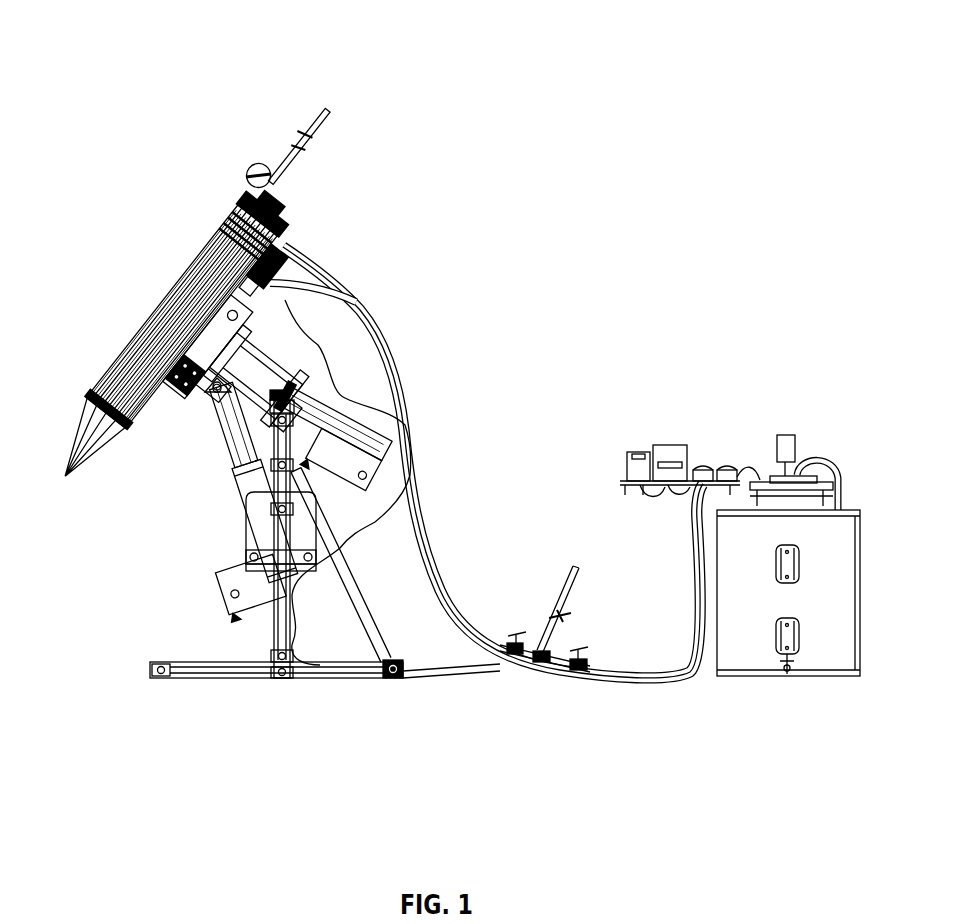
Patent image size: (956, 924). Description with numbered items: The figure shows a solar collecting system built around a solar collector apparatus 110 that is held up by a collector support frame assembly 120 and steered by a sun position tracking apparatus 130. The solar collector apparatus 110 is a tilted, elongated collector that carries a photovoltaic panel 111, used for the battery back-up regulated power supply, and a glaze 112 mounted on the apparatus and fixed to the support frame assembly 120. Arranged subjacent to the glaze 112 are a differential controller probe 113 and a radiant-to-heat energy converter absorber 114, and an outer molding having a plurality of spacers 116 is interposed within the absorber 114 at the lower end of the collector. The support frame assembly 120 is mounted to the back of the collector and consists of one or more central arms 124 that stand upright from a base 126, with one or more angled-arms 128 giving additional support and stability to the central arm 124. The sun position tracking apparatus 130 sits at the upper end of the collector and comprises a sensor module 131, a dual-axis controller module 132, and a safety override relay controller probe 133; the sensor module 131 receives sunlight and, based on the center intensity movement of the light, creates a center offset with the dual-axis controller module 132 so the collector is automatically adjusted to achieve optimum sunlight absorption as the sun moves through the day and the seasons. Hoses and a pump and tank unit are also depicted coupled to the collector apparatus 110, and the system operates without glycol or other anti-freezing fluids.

The solar collector apparatus 110 is at (166, 524).
The photovoltaic panel 111 is at (306, 103).
The glaze 112 is at (130, 341).
The differential controller probe 113 is at (250, 208).
The radiant-to-heat energy converter absorber 114 is at (118, 373).
The spacers 116 is at (83, 453).
The collector support frame assembly 120 is at (390, 605).
The central arm 124 is at (286, 636).
The base 126 is at (138, 672).
The angled-arm 128 is at (385, 638).
The sun position tracking apparatus 130 is at (228, 140).
The sensor module 131 is at (248, 174).
The dual-axis controller module 132 is at (358, 296).
The safety override relay controller probe 133 is at (206, 269).